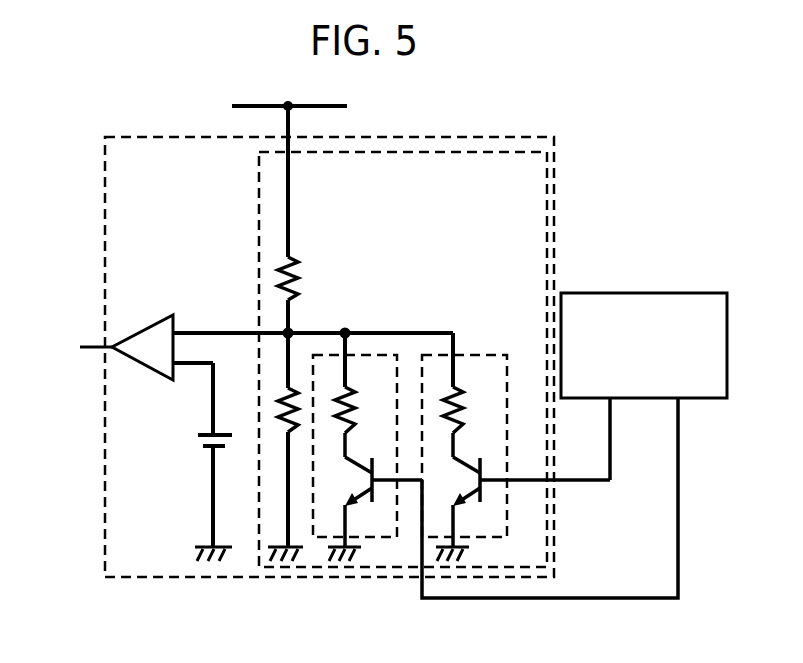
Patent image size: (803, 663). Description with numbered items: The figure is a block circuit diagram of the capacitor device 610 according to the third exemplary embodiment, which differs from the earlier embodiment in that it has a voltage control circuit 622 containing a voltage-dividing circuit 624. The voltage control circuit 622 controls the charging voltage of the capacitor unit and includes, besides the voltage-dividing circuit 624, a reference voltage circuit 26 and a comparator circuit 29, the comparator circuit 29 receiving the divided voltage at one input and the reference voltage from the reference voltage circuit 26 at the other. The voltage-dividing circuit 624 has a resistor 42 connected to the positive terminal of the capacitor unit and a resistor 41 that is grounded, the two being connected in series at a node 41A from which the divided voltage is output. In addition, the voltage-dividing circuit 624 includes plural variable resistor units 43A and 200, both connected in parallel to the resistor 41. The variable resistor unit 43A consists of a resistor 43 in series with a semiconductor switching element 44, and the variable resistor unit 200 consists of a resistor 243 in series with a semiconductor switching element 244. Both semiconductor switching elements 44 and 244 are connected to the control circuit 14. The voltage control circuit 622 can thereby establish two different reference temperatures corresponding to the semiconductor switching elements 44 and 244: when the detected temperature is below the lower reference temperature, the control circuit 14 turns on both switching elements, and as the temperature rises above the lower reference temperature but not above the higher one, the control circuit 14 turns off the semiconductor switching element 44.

The control circuit 14 is at (655, 293).
The reference voltage circuit 26 is at (187, 440).
The comparator circuit 29 is at (163, 317).
The resistor 41 is at (275, 407).
The node 41A is at (282, 330).
The resistor 42 is at (277, 268).
The resistor 43 is at (360, 408).
The variable resistor unit 43A is at (365, 353).
The semiconductor switching element 44 is at (367, 515).
The variable resistor unit 200 is at (475, 353).
The resistor 243 is at (465, 413).
The semiconductor switching element 244 is at (477, 515).
The capacitor device 610 is at (620, 185).
The voltage control circuit 622 is at (104, 215).
The voltage-dividing circuit 624 is at (258, 188).